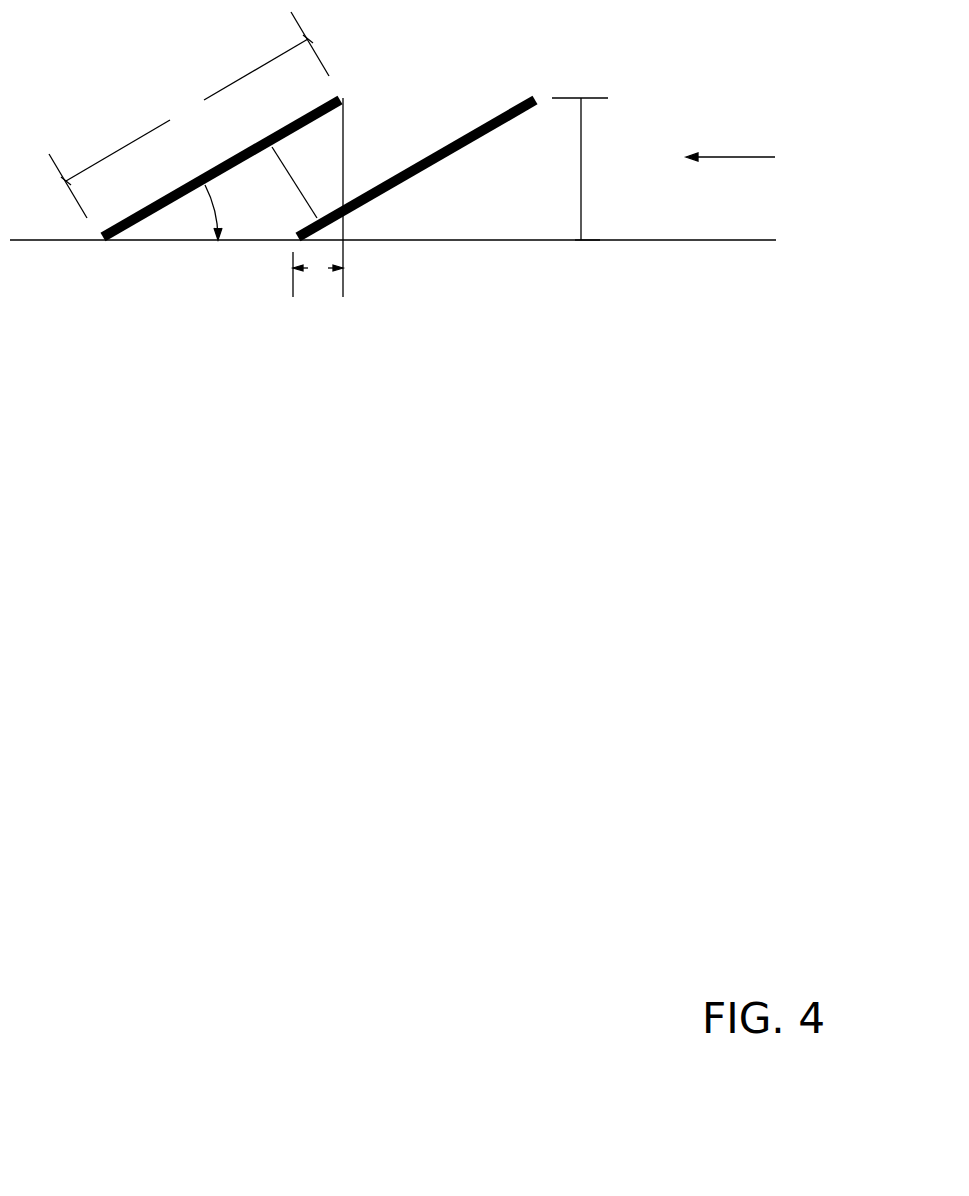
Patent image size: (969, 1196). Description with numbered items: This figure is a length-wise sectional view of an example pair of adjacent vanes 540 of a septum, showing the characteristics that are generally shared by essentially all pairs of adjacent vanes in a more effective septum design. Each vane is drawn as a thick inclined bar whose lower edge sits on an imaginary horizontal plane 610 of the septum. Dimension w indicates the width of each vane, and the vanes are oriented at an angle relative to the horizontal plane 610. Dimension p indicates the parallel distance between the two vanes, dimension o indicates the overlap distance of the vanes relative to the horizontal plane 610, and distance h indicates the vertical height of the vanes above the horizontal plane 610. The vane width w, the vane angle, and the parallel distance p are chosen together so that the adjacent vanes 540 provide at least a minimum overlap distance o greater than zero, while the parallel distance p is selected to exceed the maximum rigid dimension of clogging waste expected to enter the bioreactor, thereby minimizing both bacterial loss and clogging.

The adjacent vanes 540 is at (754, 161).
The horizontal plane 610 is at (667, 240).
The vane width w is at (189, 115).
The vertical height h is at (575, 169).
The parallel distance p is at (287, 182).
The overlap distance o is at (318, 197).